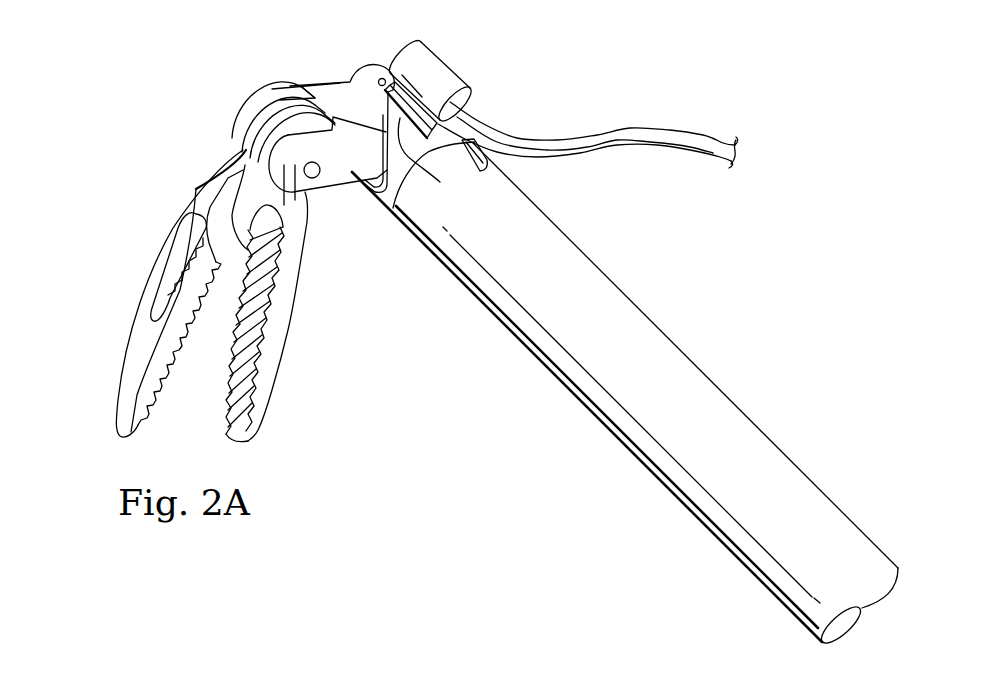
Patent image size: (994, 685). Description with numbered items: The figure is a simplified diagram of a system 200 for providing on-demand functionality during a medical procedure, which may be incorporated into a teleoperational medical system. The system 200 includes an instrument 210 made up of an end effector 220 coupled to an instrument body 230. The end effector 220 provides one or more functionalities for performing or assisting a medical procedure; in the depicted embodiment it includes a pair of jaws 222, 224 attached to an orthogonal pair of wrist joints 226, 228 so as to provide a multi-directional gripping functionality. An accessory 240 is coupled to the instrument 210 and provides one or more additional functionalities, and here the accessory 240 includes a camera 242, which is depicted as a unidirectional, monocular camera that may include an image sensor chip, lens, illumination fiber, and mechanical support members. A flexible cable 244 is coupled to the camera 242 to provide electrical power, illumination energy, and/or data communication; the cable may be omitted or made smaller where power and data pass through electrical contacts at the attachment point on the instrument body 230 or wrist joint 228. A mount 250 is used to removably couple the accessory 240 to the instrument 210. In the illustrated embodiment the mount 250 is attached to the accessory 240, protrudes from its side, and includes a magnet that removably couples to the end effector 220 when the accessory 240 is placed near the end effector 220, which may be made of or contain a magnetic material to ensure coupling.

The system 200 is at (835, 62).
The instrument 210 is at (574, 449).
The end effector 220 is at (138, 242).
The jaw 222 is at (130, 377).
The jaw 224 is at (254, 398).
The wrist joint 226 is at (288, 115).
The wrist joint 228 is at (386, 78).
The instrument body 230 is at (669, 352).
The accessory 240 is at (518, 88).
The camera 242 is at (436, 72).
The flexible cable 244 is at (643, 137).
The mount 250 is at (425, 148).